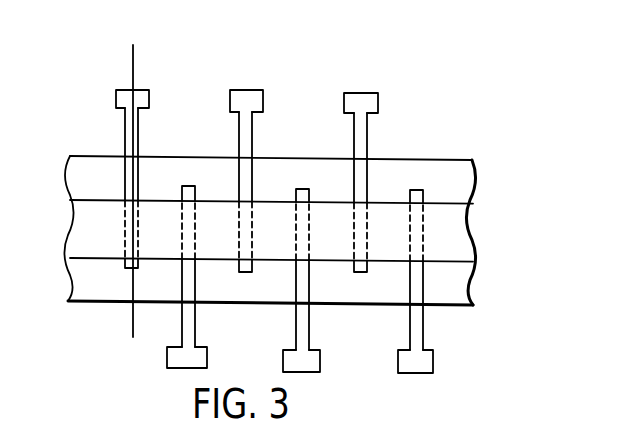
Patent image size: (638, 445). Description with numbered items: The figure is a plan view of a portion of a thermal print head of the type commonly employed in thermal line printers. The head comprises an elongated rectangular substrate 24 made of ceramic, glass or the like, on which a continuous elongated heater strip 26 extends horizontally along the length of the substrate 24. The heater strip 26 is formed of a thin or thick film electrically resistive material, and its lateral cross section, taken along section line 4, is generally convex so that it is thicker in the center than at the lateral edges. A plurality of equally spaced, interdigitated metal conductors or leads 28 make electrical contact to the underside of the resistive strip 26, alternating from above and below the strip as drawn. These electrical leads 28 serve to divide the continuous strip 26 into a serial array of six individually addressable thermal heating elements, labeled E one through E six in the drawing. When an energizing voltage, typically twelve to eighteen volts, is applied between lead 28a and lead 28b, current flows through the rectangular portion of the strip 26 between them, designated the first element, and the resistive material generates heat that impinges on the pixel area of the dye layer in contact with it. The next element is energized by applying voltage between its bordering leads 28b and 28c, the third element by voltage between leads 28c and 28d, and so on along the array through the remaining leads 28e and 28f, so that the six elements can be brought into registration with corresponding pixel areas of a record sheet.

The substrate 24 is at (463, 177).
The heater strip 26 is at (463, 247).
The electrical leads 28 is at (233, 80).
The lead 28a is at (136, 126).
The lead 28b is at (188, 330).
The lead 28c is at (247, 96).
The lead 28d is at (304, 344).
The lead 28e is at (364, 101).
The lead 28f is at (417, 340).
The section line 4- 4 is at (138, 52).